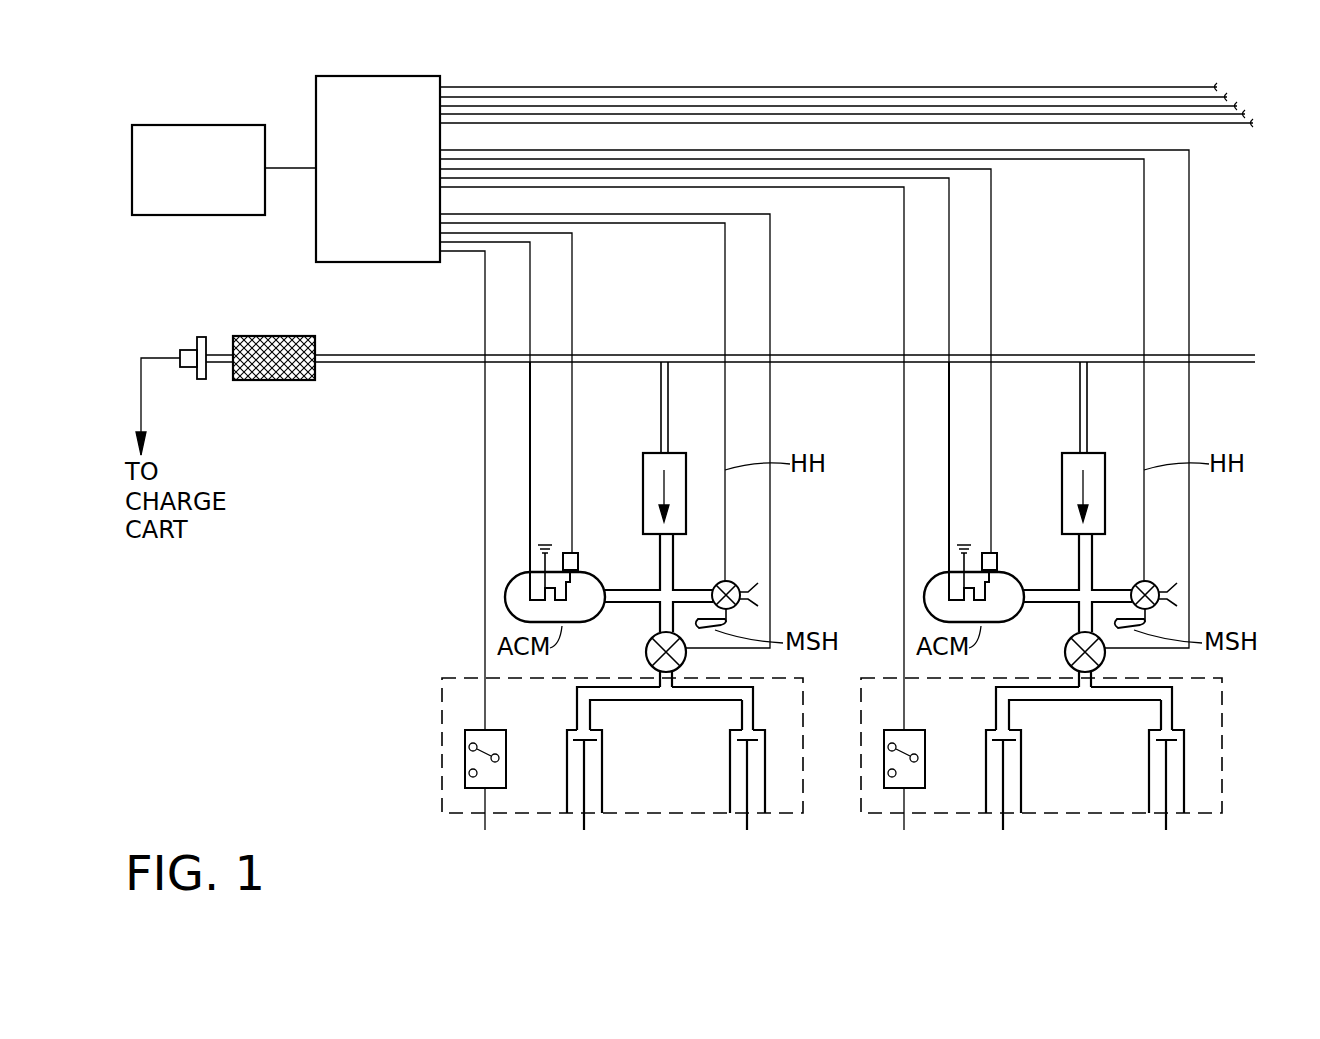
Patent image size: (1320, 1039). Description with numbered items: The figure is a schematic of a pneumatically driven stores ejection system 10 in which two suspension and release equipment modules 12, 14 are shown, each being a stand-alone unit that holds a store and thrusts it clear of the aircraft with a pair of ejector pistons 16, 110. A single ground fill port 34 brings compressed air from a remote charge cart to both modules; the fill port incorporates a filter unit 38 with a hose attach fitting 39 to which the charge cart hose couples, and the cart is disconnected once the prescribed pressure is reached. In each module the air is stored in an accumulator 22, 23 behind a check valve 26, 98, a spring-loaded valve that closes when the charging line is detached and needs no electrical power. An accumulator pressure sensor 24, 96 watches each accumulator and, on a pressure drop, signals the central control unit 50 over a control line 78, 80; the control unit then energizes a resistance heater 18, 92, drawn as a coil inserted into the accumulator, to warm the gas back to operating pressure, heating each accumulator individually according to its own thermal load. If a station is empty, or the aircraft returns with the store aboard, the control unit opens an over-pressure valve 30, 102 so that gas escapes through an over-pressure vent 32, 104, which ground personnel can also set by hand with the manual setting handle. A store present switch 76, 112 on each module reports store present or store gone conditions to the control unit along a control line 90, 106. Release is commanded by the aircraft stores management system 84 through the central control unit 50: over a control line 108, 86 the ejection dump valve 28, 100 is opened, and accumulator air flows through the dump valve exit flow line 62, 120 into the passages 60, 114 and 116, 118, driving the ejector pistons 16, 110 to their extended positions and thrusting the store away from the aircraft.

The stores ejection system 10 is at (312, 655).
The suspension and release equipment module 12 is at (442, 702).
The suspension and release equipment module 14 is at (1090, 745).
The ejector pistons 16 is at (735, 790).
The resistance heater 18 is at (532, 593).
The accumulator 22 is at (595, 577).
The accumulator 23 is at (994, 587).
The accumulator pressure sensor 24 is at (578, 556).
The check valve 26 is at (655, 452).
The ejection dump valve 28 is at (642, 646).
The over-pressure valve 30 is at (737, 582).
The over-pressure vent 32 is at (755, 598).
The ground fill port 34 is at (800, 352).
The filter unit 38 is at (303, 335).
The hose attach fitting 39 is at (201, 337).
The central control unit 50 is at (400, 76).
The passage 60 is at (605, 703).
The dump valve exit flow line 62 is at (677, 683).
The store present switch 76 is at (487, 728).
The control line 78 is at (572, 387).
The control line 80 is at (1030, 457).
The aircraft stores management system 84 is at (160, 125).
The control line 86 is at (1180, 505).
The control line 90 is at (485, 452).
The resistance heater 92 is at (924, 481).
The accumulator pressure sensor 96 is at (1015, 548).
The check valve 98 is at (1067, 473).
The ejection dump valve 100 is at (1049, 652).
The over-pressure valve 102 is at (1190, 574).
The over-pressure vent 104 is at (1214, 600).
The control line 106 is at (864, 596).
The control line 108 is at (770, 408).
The ejector pistons 110 is at (1085, 780).
The store present switch 112 is at (929, 742).
The passage 114 is at (713, 702).
The passage 116 is at (1078, 715).
The passage 118 is at (1116, 727).
The dump valve exit flow line 120 is at (1127, 670).